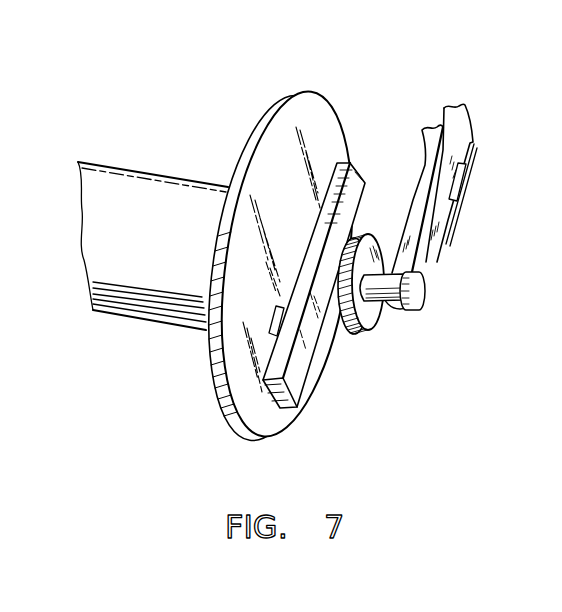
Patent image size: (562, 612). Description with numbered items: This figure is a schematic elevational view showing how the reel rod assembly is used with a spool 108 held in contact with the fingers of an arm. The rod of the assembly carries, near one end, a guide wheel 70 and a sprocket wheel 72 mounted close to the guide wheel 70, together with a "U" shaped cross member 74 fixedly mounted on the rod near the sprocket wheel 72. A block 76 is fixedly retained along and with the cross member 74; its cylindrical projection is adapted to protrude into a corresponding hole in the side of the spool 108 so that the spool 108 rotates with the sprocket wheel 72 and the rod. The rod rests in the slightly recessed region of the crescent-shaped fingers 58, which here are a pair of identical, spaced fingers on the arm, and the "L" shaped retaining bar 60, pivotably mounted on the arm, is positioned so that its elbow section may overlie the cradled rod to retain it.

The spool 108 is at (297, 180).
The "U" shaped cross member 74 is at (308, 338).
The block 76 is at (275, 324).
The sprocket wheel 72 is at (363, 312).
The guide wheel 70 is at (419, 298).
The finger 58 is at (417, 213).
The "L" shaped retaining bar 60 is at (457, 213).